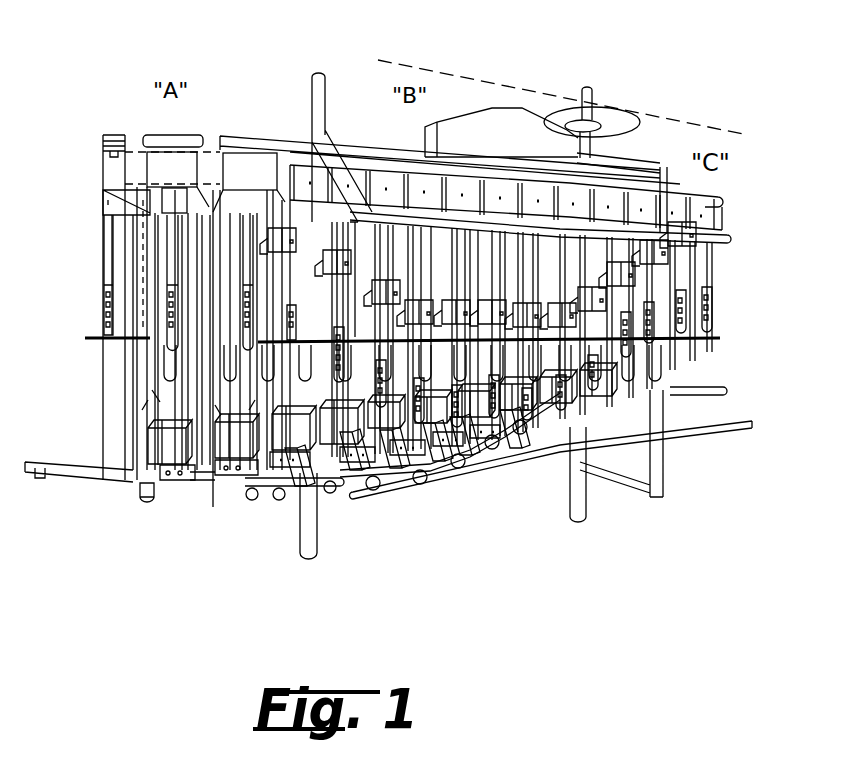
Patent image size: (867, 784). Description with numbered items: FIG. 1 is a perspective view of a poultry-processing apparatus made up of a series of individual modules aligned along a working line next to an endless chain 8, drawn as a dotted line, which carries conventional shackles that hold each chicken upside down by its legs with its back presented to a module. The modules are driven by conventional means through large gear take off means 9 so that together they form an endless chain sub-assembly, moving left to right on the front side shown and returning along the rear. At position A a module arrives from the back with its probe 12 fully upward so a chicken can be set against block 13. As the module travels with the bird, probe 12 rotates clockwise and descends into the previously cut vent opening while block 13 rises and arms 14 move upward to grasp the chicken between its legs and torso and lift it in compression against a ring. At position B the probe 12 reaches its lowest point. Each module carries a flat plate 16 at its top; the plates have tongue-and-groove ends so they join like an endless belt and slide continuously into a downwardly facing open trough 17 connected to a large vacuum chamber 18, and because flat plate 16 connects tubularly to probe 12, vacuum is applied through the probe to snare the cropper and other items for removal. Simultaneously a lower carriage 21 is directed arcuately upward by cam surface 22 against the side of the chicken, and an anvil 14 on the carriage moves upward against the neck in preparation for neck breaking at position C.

The endless chain 8 is at (465, 80).
The large gear take off means 9 is at (606, 114).
The probe 12 is at (157, 338).
The block 13 is at (182, 455).
The arms 14 is at (155, 395).
The flat plate 16 is at (352, 152).
The downwardly facing open trough 17 is at (395, 148).
The vacuum chamber 18 is at (455, 137).
The lower carriage 21 is at (292, 503).
The cam surface 22 is at (368, 497).